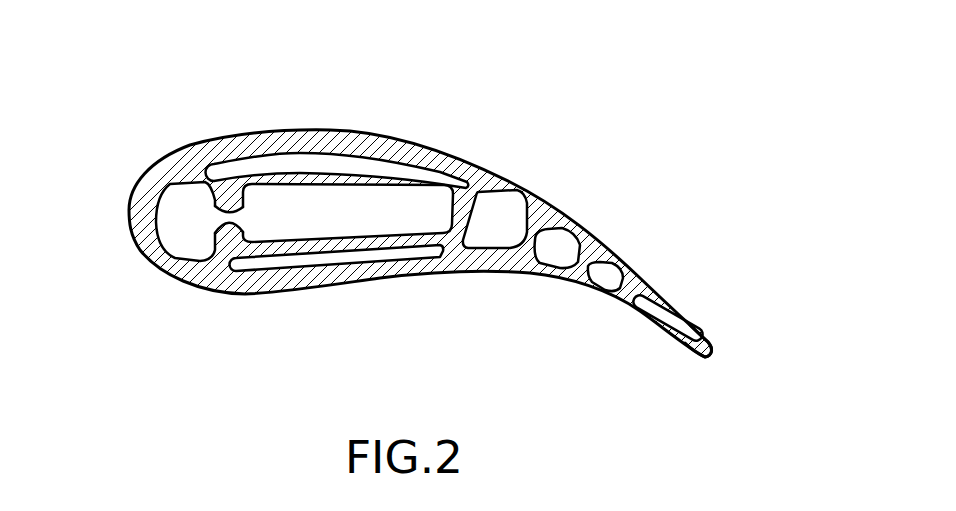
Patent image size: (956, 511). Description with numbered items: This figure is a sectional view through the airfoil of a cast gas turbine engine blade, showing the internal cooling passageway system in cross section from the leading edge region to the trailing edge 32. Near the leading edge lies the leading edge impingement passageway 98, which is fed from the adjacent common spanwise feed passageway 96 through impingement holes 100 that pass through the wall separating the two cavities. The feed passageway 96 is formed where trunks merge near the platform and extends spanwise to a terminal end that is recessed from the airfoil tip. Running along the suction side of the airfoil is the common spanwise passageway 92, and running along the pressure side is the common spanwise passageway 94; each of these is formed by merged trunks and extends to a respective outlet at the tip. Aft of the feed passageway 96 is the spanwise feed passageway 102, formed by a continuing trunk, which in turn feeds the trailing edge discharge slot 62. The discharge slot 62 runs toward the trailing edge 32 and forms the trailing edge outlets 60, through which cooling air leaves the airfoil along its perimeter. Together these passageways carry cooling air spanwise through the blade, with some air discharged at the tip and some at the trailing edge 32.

The trailing edge 32 is at (705, 351).
The trailing edge outlets 60 is at (700, 365).
The trailing edge discharge slot 62 is at (678, 307).
The common spanwise passageway 92 is at (320, 157).
The common spanwise passageway 94 is at (407, 250).
The common spanwise feed passageway 96 is at (298, 222).
The leading edge impingement passageway 98 is at (175, 227).
The impingement holes 100 is at (233, 222).
The spanwise feed passageway 102 is at (503, 207).